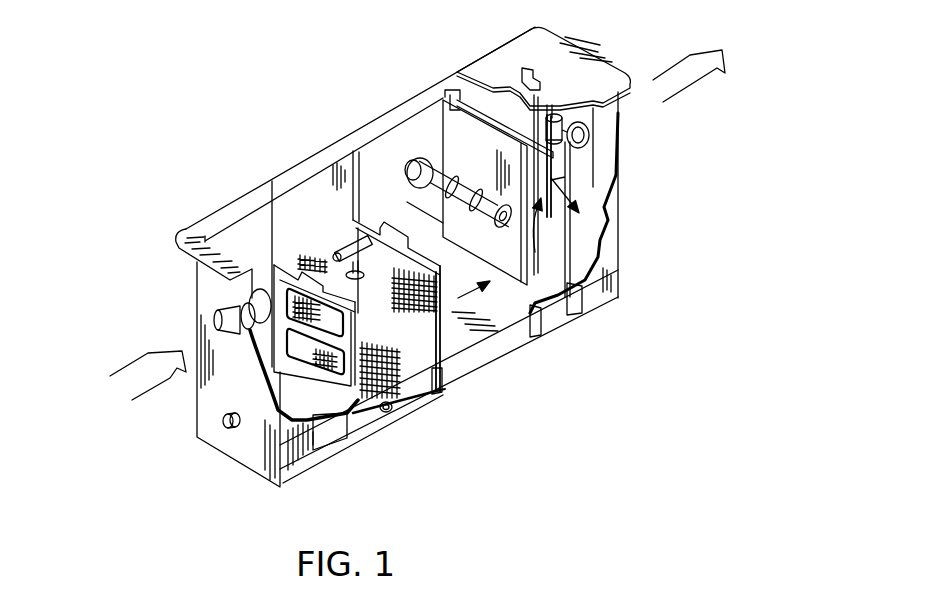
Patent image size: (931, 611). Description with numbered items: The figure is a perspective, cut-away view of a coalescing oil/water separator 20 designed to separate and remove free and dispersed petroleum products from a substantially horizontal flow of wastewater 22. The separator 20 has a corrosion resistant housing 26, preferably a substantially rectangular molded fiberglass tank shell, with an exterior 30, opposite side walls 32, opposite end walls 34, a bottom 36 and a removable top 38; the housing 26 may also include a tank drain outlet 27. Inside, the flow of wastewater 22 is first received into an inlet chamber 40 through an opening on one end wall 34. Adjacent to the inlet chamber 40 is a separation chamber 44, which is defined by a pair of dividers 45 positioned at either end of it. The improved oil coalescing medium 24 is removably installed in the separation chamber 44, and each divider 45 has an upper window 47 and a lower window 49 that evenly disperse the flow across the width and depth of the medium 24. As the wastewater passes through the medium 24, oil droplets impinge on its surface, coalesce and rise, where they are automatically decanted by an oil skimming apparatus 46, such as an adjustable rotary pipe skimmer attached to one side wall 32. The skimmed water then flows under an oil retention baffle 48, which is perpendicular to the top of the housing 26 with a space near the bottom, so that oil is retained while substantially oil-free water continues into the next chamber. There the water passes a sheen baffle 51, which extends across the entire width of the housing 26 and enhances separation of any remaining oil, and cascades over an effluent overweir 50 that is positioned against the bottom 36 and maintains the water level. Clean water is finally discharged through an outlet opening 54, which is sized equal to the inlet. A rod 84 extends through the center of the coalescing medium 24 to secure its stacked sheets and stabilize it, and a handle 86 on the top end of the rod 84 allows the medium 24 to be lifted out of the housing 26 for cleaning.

The coalescing oil/water separator 20 is at (324, 134).
The flow of wastewater 22 is at (141, 331).
The oil coalescing medium 24 is at (304, 279).
The housing 26 is at (640, 228).
The tank drain outlet 27 is at (228, 428).
The exterior 30 is at (192, 284).
The side wall 32 is at (333, 146).
The end wall 34 is at (207, 407).
The bottom 36 is at (500, 337).
The removable top 38 is at (562, 58).
The inlet chamber 40 is at (232, 236).
The separation chamber 44 is at (305, 196).
The divider 45 is at (358, 403).
The oil skimming apparatus 46 is at (416, 149).
The upper window 47 is at (320, 322).
The oil retention baffle 48 is at (453, 123).
The lower window 49 is at (314, 419).
The effluent overweir 50 is at (583, 312).
The sheen baffle 51 is at (561, 244).
The outlet opening 54 is at (588, 140).
The rod 84 is at (360, 270).
The handle 86 is at (372, 236).